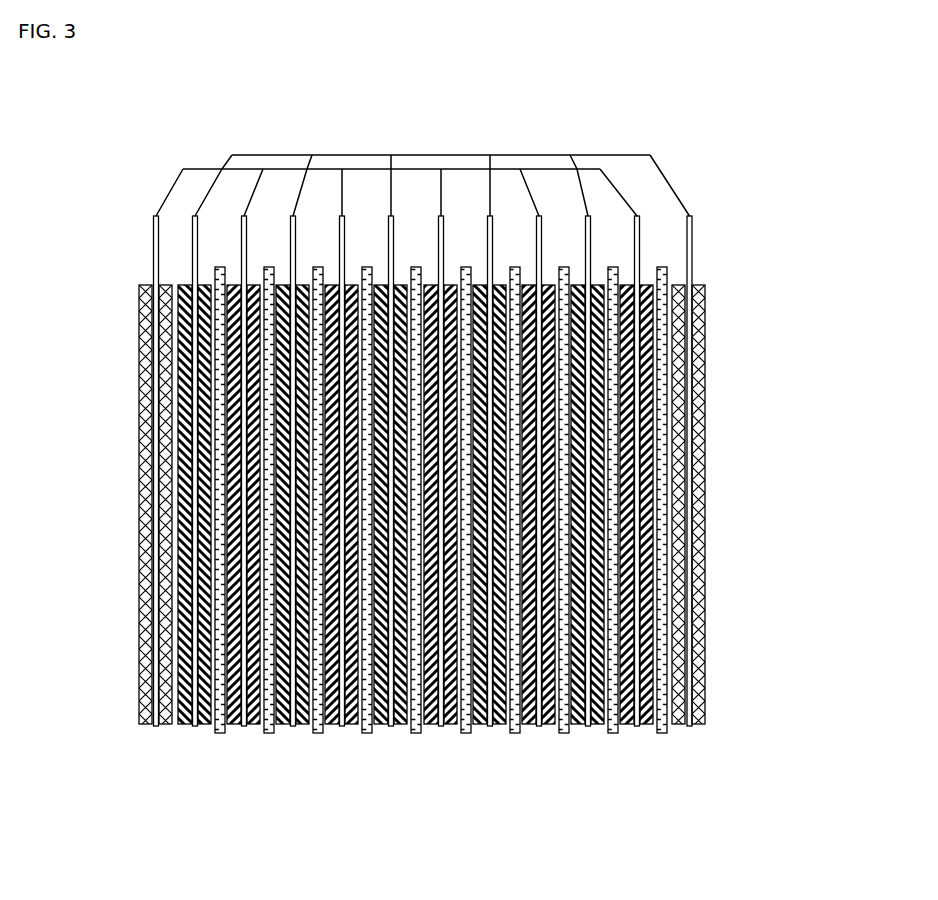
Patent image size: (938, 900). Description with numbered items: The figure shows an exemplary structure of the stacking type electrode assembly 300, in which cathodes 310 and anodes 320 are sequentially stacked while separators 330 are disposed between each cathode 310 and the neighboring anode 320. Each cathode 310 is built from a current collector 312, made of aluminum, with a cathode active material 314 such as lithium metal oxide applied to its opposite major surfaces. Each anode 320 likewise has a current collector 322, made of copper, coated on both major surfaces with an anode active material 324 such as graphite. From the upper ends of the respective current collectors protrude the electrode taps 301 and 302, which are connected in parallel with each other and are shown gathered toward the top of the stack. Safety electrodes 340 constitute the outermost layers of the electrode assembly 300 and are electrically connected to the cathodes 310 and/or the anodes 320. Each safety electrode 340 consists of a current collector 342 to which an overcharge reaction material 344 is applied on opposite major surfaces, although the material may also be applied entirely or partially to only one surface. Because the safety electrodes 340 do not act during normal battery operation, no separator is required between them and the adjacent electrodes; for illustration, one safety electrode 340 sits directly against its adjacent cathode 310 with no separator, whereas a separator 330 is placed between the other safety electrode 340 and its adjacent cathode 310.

The stacking type electrode assembly 300 is at (56, 106).
The electrode tap 301 is at (192, 246).
The electrode tap 302 is at (640, 247).
The cathode 310 is at (186, 749).
The current collector 312 is at (293, 726).
The cathode active material 314 is at (283, 725).
The anode 320 is at (643, 750).
The current collector 322 is at (538, 726).
The anode active material 324 is at (552, 726).
The separator 330 is at (368, 733).
The safety electrode 340 is at (426, 482).
The current collector 342 is at (153, 725).
The overcharge reaction material 344 is at (140, 485).